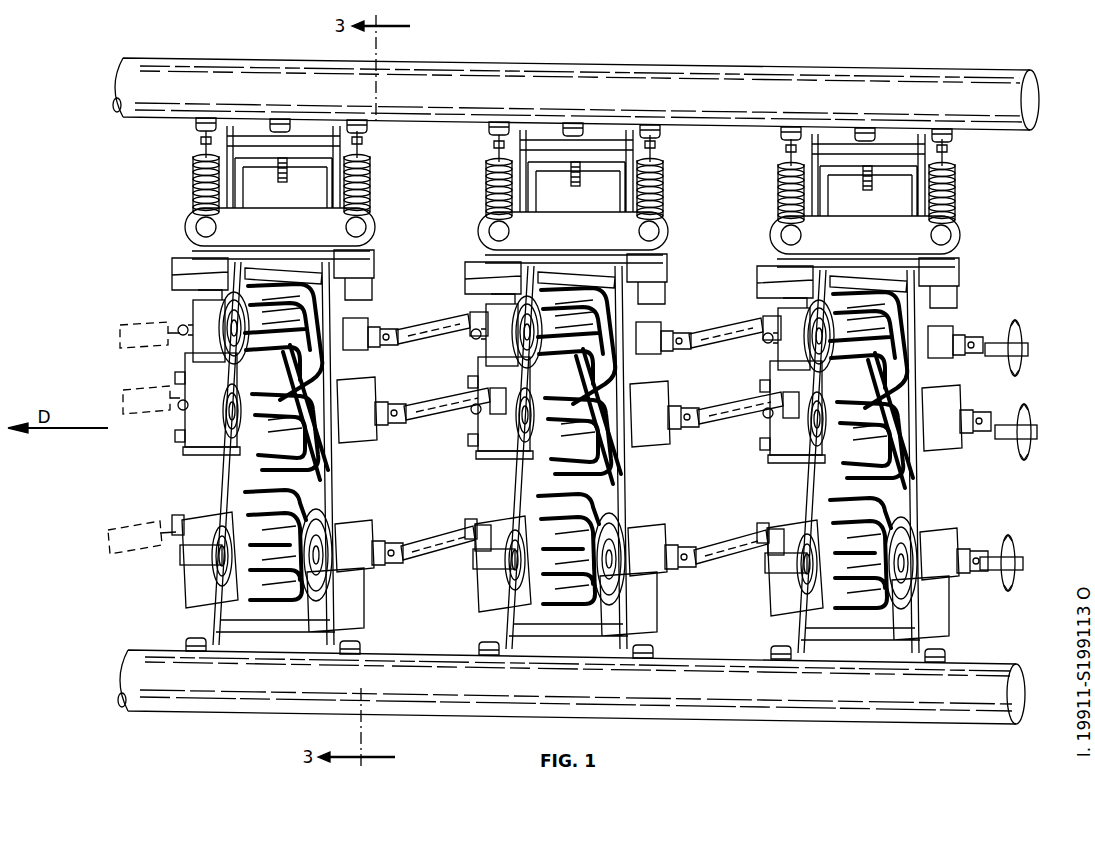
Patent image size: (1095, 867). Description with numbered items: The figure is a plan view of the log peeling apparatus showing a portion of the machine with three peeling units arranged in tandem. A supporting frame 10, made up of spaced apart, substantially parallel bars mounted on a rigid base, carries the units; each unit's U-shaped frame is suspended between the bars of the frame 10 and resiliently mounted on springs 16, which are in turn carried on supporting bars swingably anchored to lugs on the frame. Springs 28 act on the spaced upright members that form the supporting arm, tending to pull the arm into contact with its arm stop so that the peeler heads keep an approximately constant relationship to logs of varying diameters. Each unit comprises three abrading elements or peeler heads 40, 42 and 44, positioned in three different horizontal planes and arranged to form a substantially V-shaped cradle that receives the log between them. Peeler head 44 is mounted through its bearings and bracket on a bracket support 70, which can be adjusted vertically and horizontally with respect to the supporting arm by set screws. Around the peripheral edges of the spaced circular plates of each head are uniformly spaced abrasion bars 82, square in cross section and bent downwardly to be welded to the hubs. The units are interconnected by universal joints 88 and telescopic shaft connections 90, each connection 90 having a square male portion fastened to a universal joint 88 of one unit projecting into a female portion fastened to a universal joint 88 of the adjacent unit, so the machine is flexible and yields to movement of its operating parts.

The supporting frame 10 is at (952, 88).
The springs 16 is at (480, 130).
The springs 28 is at (484, 186).
The bracket support 70 is at (572, 237).
The peeler head 44 is at (330, 316).
The peeler head 40 is at (318, 416).
The peeler head 42 is at (306, 522).
The abrasion bars 82 is at (197, 316).
The universal joints 88 is at (388, 428).
The telescopic shaft connections 90 is at (147, 334).